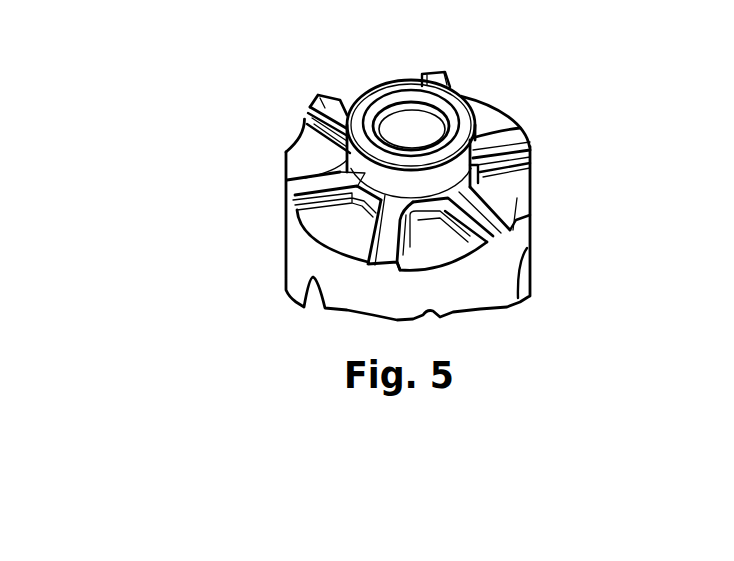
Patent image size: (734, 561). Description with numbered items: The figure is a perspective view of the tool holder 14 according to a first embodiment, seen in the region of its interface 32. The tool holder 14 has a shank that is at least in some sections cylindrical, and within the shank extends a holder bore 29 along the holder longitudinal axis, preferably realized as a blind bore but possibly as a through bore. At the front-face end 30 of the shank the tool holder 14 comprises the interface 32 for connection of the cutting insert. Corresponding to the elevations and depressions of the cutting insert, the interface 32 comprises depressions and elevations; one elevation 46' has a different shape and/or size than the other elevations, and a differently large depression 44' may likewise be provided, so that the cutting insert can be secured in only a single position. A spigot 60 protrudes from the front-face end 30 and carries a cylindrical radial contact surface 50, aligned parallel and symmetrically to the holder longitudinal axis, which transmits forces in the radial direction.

The tool holder 14 is at (263, 248).
The holder bore 29 is at (393, 125).
The front-face end 30 is at (537, 167).
The interface 32 is at (527, 99).
The depression 44' is at (496, 77).
The elevation 46' is at (546, 130).
The radial contact surface 50 is at (312, 174).
The spigot 60 is at (460, 162).